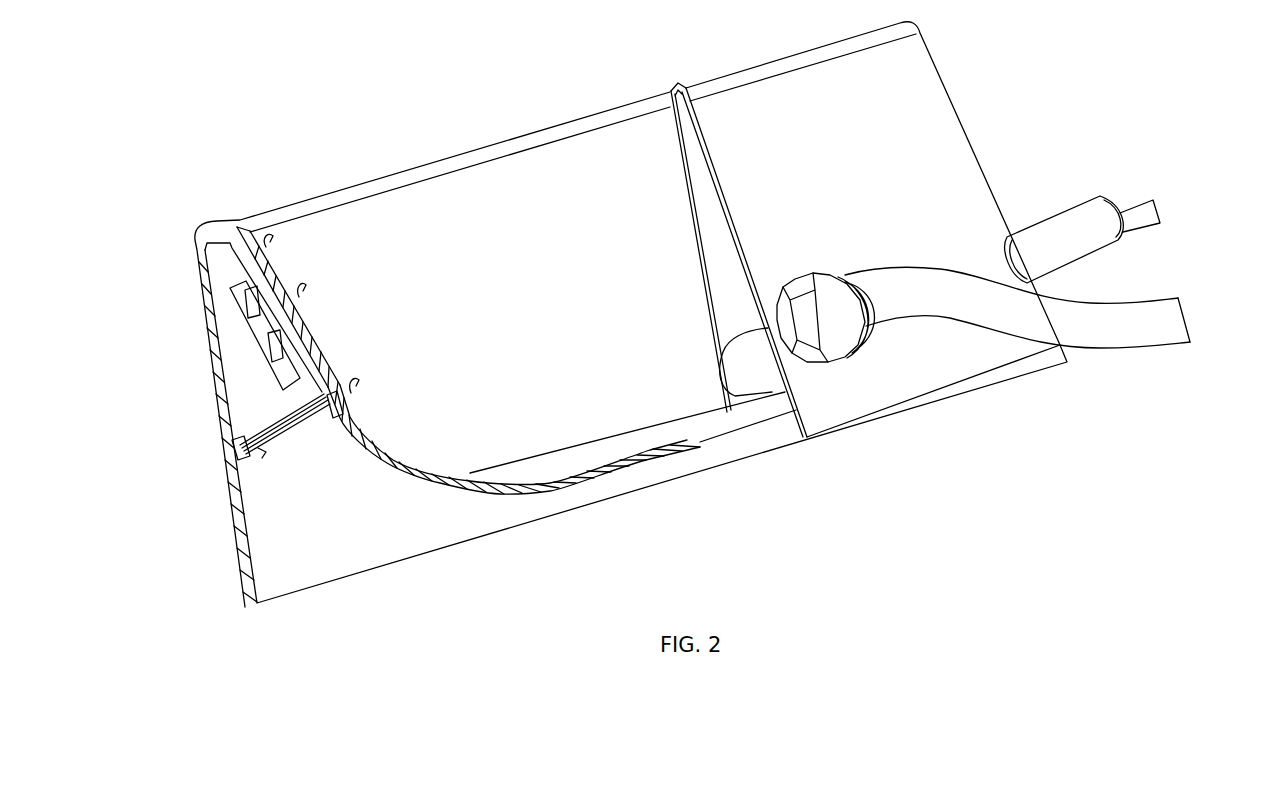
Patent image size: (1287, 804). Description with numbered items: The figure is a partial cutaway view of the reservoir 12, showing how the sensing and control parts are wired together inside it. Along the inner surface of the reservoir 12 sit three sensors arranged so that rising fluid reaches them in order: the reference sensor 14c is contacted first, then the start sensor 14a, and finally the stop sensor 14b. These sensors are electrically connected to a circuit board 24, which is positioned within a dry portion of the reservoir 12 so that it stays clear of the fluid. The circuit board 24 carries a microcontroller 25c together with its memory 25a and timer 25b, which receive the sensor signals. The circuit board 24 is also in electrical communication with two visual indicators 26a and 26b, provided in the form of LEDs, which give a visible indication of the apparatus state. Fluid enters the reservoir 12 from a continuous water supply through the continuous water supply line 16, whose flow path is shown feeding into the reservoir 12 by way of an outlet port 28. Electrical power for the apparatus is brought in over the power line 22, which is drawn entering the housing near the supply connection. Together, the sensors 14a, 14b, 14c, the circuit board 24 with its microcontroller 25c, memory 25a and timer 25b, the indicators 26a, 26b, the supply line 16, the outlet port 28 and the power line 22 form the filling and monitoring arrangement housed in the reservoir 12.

The reservoir 12 is at (447, 260).
The start sensor 14a is at (303, 282).
The stop sensor 14b is at (273, 234).
The reference sensor 14c is at (368, 393).
The continuous water supply line 16 is at (889, 285).
The power line 22 is at (1133, 203).
The circuit board 24 is at (325, 419).
The memory 25a is at (230, 300).
The timer 25b is at (280, 350).
The microcontroller 25c is at (277, 372).
The visual indicator 26a is at (237, 447).
The visual indicator 26b is at (256, 460).
The outlet port 28 is at (696, 367).